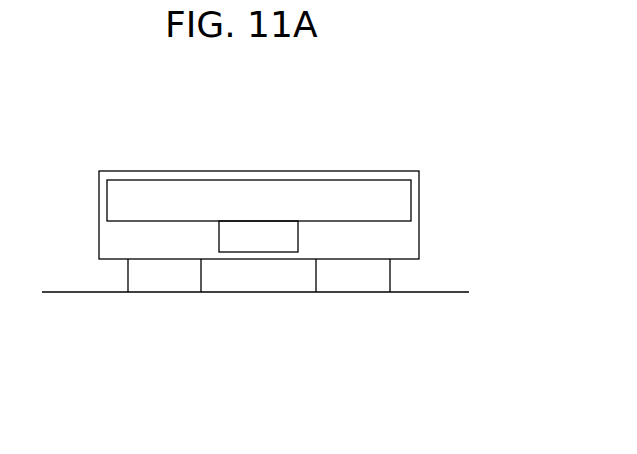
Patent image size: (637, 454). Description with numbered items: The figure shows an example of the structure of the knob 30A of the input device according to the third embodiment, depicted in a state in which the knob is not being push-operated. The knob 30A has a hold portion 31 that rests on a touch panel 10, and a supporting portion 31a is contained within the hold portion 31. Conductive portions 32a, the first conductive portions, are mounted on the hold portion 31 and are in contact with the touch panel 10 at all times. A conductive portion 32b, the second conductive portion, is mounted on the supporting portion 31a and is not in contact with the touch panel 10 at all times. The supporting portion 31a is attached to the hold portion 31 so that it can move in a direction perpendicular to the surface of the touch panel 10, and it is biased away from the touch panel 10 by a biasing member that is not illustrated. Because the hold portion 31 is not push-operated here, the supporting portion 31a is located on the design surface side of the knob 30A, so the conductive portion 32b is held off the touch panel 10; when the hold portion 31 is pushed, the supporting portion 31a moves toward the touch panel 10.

The knob 30A is at (282, 128).
The hold portion 31 is at (372, 171).
The supporting portion 31a is at (405, 200).
The conductive portions 32a is at (165, 282).
The conductive portion 32b is at (258, 243).
The touch panel 10 is at (438, 292).